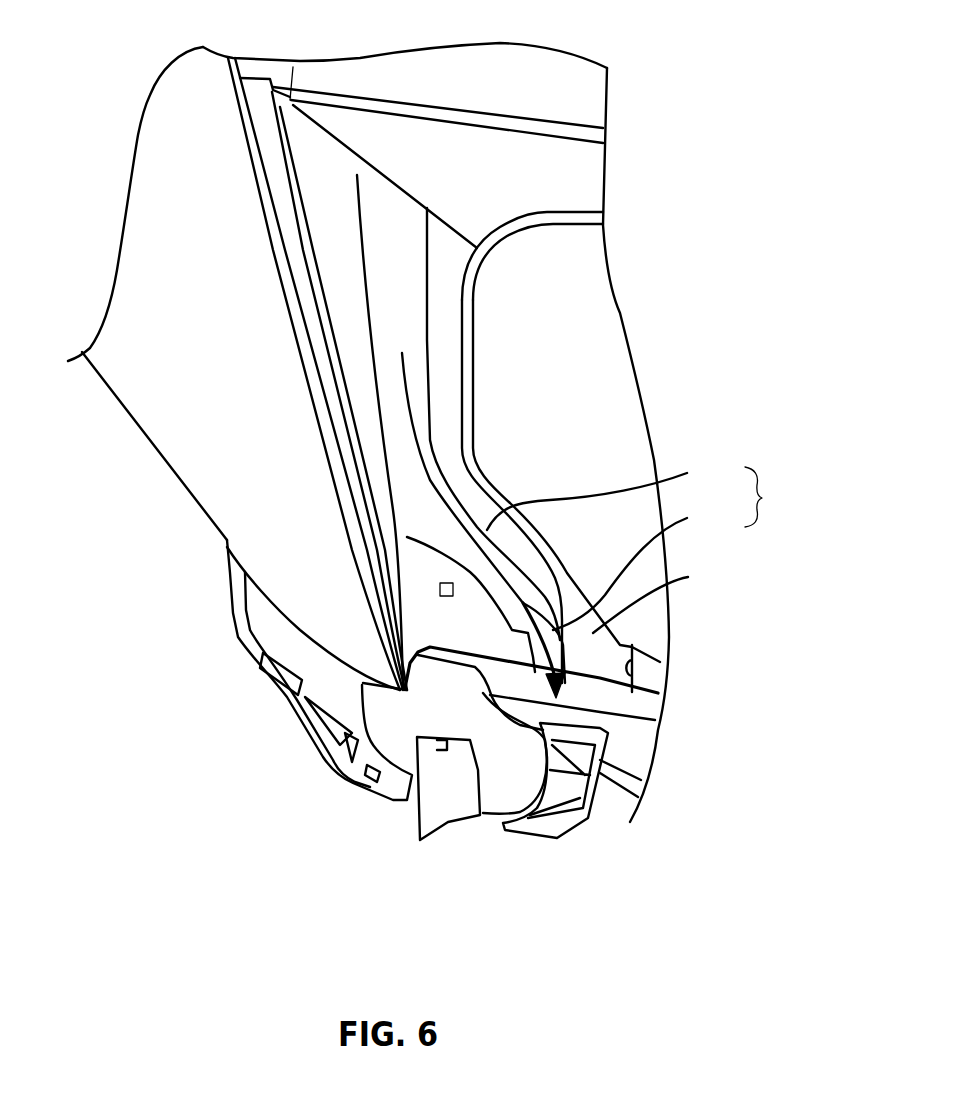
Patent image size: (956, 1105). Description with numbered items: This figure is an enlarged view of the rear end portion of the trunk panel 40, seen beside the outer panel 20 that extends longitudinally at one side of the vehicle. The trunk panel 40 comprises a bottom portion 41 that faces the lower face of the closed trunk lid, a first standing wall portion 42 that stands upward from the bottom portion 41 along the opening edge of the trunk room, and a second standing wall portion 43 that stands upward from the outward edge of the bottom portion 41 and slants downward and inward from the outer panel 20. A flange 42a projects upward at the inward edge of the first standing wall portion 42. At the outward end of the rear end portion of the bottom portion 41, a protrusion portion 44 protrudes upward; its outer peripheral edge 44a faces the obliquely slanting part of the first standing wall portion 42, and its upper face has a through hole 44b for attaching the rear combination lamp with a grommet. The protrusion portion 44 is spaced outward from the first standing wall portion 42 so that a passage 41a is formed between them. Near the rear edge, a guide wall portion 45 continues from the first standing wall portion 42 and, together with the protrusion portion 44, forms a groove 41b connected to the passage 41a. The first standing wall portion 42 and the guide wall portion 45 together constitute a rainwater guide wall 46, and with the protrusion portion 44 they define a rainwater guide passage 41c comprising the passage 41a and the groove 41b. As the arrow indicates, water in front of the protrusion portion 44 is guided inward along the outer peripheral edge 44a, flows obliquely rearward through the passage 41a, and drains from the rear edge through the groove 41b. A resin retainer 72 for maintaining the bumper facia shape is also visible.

The outer panel 20 is at (166, 430).
The trunk panel 40 is at (291, 84).
The bottom portion 41 is at (398, 210).
The passage 41a is at (612, 497).
The groove 41b is at (645, 568).
The rainwater guide passage 41c is at (777, 497).
The first standing wall portion 42 is at (443, 351).
The flange 42a is at (473, 392).
The second standing wall portion 43 is at (303, 142).
The protrusion portion 44 is at (417, 577).
The outer peripheral edge 44a is at (437, 543).
The through hole 44b is at (453, 596).
The guide wall portion 45 is at (656, 599).
The rainwater guide wall 46 is at (443, 428).
The retainer 72 is at (563, 837).